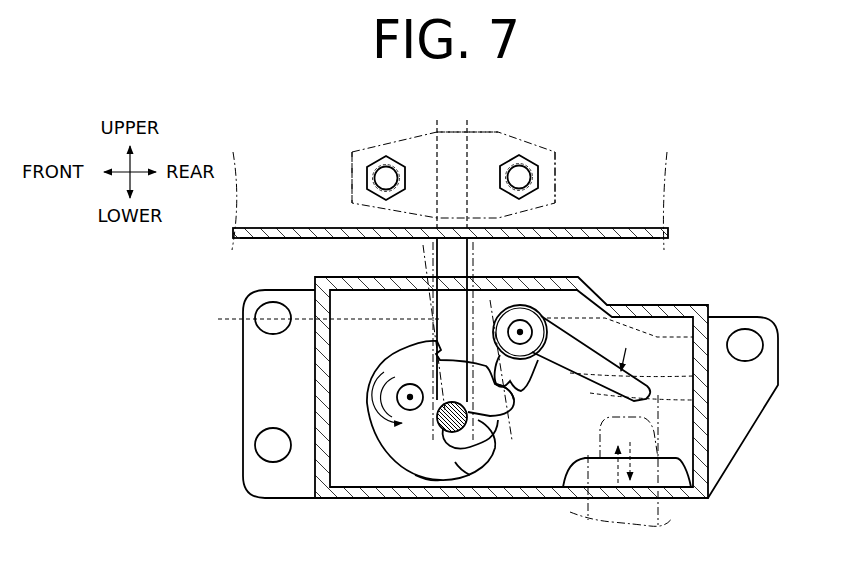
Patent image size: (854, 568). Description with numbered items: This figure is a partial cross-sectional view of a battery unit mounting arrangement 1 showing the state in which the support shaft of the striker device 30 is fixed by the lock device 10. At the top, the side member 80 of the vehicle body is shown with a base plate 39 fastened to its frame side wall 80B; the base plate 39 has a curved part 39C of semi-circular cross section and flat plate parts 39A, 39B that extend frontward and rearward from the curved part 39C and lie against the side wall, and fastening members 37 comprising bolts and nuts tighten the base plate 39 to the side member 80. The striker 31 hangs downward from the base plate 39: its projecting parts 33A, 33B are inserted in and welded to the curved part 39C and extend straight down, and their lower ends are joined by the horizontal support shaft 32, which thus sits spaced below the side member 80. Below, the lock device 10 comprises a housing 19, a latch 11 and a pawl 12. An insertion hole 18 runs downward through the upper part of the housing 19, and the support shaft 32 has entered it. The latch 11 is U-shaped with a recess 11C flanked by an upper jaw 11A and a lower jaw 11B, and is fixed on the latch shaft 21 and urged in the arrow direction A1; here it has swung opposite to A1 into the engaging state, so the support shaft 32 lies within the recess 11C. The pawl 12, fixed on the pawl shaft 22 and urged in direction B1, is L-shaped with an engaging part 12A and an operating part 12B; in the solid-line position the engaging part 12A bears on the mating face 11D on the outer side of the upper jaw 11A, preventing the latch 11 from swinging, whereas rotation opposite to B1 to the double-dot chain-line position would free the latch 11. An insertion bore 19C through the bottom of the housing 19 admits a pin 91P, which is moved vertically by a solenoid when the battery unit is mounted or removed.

The vehicle door latch device 1 is at (736, 247).
The lock device 10 is at (314, 502).
The latch 11 is at (369, 400).
The upper jaw 11A is at (482, 438).
The lower jaw 11B is at (472, 460).
The recess 11C is at (440, 445).
The mating face 11D is at (506, 410).
The pawl 12 is at (758, 321).
The engaging part 12A is at (550, 384).
The operating part 12B is at (658, 329).
The insertion hole 18 is at (312, 319).
The housing 19 is at (700, 475).
The insertion bore 19C is at (584, 470).
The latch shaft 21 is at (408, 384).
The pawl shaft 22 is at (532, 321).
The striker device 30 is at (428, 249).
The striker 31 is at (471, 252).
The support shaft 32 is at (470, 433).
The left projecting part 33A is at (467, 342).
The right projecting part 33B is at (478, 270).
The fastening members 37 is at (365, 178).
The base plate 39 is at (503, 134).
The flat plate part 39A is at (358, 155).
The flat plate part 39B is at (548, 152).
The curved part 39C is at (453, 158).
The side member 80 is at (646, 188).
The frame side wall 80B is at (286, 198).
The pin 91P is at (641, 508).
The arrow direction A1 is at (403, 404).
The arrow direction B1 is at (638, 360).